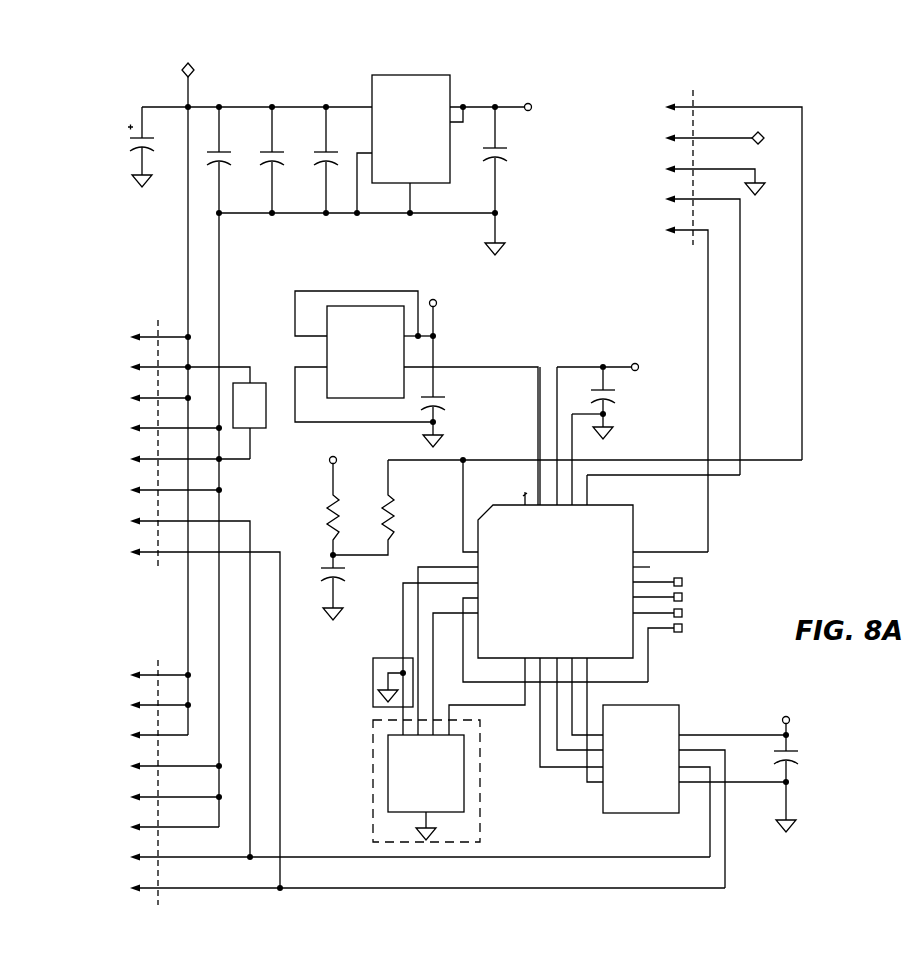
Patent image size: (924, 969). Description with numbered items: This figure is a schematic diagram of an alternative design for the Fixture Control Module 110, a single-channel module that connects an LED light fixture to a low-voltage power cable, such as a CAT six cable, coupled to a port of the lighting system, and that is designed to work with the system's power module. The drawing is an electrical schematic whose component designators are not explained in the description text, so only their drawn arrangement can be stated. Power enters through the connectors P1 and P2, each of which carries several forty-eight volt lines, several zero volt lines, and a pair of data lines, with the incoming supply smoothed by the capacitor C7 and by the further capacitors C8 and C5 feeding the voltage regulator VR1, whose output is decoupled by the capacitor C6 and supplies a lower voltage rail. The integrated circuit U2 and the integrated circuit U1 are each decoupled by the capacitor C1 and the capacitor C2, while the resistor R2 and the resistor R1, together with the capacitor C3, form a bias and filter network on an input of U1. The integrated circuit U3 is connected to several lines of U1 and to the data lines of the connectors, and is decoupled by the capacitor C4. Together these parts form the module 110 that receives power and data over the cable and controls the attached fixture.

The Fixture Control Module 110 is at (835, 537).
The microcontroller U1 is at (580, 587).
The integrated circuit U2 is at (364, 356).
The integrated circuit U3 is at (641, 759).
The voltage regulator VR1 is at (417, 144).
The capacitor C1 is at (458, 391).
The capacitor C2 is at (627, 404).
The capacitor C3 is at (355, 587).
The capacitor C4 is at (809, 778).
The capacitor C5 is at (343, 160).
The capacitor C6 is at (515, 181).
The capacitor C7 is at (167, 160).
The capacitor C8 is at (288, 160).
The resistor R1 is at (382, 507).
The resistor R2 is at (313, 509).
The connector P1 is at (115, 434).
The connector P2 is at (115, 770).